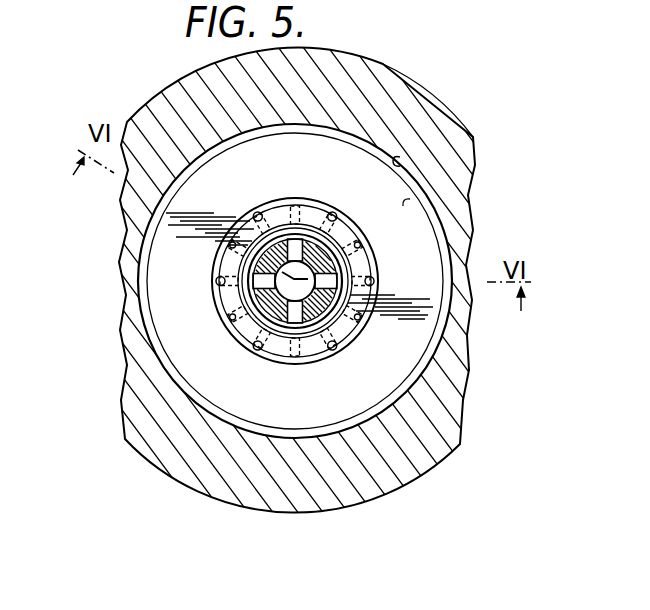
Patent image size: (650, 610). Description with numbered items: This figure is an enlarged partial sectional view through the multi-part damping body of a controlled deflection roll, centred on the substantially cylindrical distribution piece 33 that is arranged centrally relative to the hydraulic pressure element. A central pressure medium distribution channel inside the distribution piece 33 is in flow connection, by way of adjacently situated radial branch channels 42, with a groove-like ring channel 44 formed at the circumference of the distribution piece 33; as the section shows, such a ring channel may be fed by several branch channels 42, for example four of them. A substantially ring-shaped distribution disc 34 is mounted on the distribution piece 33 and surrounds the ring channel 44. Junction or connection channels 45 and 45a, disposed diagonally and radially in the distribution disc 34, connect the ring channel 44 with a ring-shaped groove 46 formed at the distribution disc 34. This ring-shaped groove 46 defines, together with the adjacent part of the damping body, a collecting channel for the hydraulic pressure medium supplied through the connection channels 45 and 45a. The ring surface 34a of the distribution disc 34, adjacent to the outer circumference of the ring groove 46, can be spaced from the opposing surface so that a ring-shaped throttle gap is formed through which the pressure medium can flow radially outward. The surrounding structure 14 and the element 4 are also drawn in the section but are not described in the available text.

The housing 14 is at (422, 104).
The seal hook 4 is at (405, 159).
The ring-shaped distribution disc 34 is at (420, 181).
The ring surface 34a is at (406, 200).
The ring-shaped groove 46 is at (372, 261).
The ring channel 44 is at (258, 327).
The cylindrical distribution piece 33 is at (264, 262).
The radial branch channel 42 is at (297, 249).
The junction channel 45 is at (375, 281).
The junction channel 45a is at (228, 312).